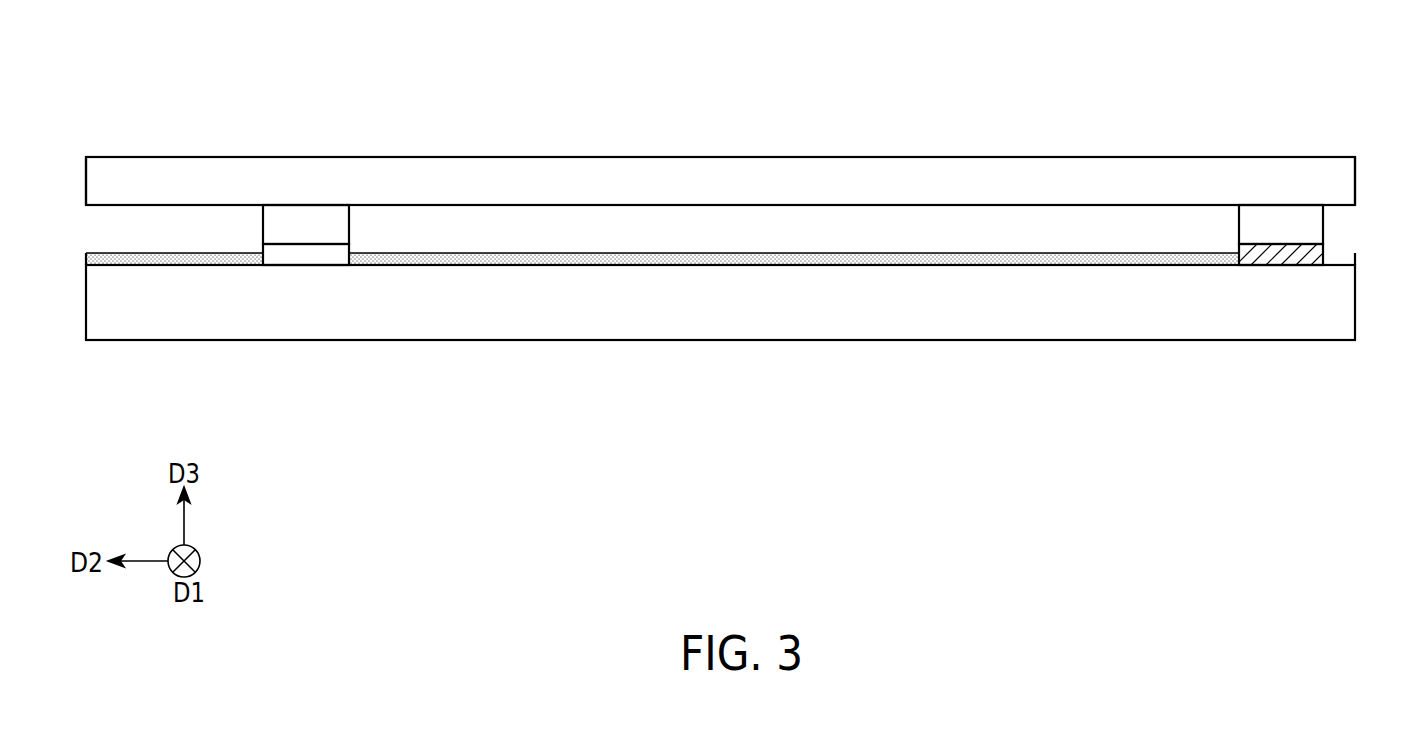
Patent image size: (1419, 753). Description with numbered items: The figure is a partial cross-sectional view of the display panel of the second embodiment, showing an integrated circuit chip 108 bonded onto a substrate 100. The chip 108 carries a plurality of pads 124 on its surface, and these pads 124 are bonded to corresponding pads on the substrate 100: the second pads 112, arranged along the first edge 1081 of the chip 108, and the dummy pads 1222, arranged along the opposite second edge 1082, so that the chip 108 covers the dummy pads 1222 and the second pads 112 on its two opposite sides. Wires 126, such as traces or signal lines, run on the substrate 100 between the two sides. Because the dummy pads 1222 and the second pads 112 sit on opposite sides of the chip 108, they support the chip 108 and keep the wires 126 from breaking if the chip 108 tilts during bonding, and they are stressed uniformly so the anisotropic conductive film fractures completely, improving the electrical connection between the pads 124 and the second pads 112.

The substrate 100 is at (774, 304).
The integrated circuit chip 108 is at (772, 183).
The edge of the integrated circuit chip 1081 is at (1355, 173).
The edge of the integrated circuit chip 1082 is at (86, 173).
The second pad 112 is at (1282, 255).
The pad 124 is at (297, 220).
The dummy pad 1222 is at (300, 253).
The wire 126 is at (1132, 255).